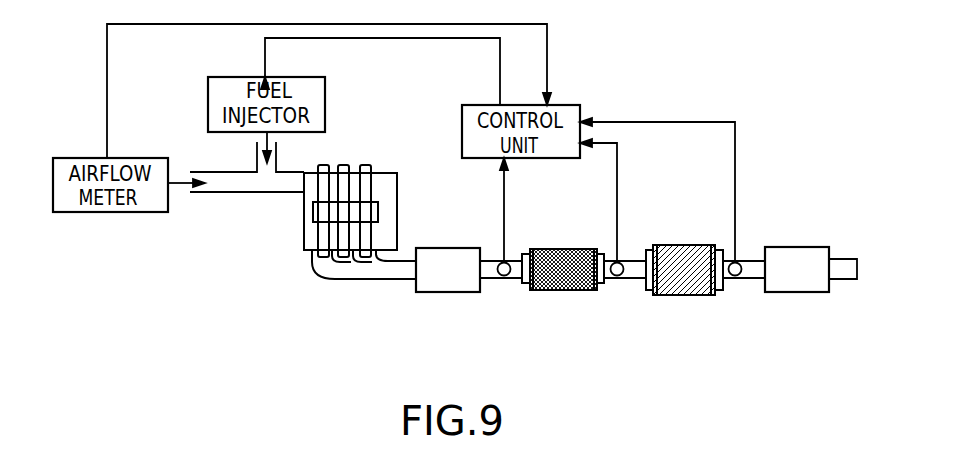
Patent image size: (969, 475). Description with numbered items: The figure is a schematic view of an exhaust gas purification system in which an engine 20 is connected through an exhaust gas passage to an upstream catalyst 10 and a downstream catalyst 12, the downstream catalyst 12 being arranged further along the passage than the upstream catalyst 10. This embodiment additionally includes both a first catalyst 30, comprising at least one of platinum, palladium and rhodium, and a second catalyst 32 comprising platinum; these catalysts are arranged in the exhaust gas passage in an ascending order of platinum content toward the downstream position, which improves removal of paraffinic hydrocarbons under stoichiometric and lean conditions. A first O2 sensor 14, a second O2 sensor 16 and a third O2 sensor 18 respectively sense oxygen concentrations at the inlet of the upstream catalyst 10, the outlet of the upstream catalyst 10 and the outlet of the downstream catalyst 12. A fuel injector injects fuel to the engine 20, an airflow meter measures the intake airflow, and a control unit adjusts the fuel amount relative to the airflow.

The upstream catalyst 10 is at (563, 290).
The downstream catalyst 12 is at (683, 295).
The first O2 sensor 14 is at (504, 276).
The second O2 sensor 16 is at (617, 276).
The third O2 sensor 18 is at (735, 276).
The engine 20 is at (304, 228).
The first catalyst 30 is at (448, 292).
The second catalyst 32 is at (795, 292).